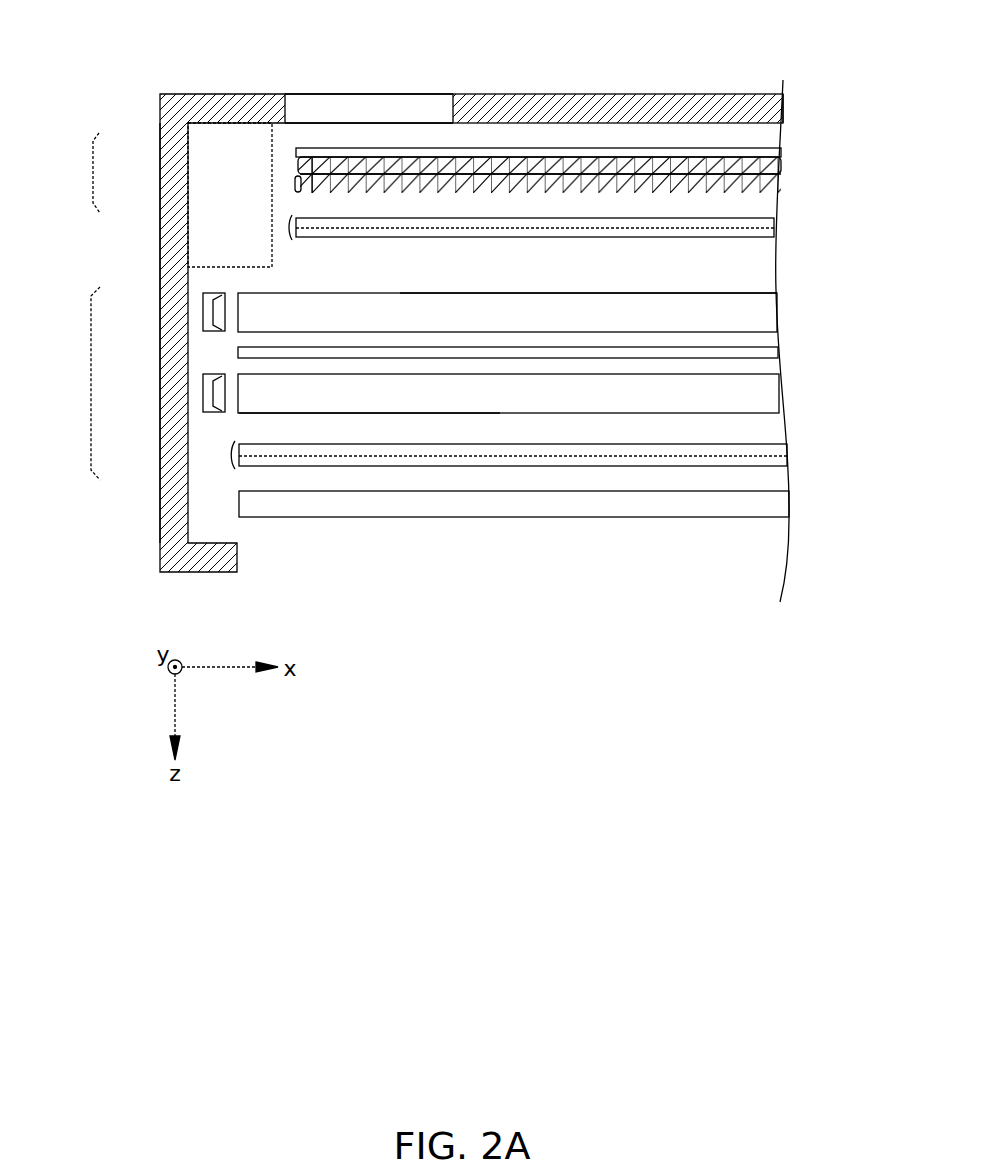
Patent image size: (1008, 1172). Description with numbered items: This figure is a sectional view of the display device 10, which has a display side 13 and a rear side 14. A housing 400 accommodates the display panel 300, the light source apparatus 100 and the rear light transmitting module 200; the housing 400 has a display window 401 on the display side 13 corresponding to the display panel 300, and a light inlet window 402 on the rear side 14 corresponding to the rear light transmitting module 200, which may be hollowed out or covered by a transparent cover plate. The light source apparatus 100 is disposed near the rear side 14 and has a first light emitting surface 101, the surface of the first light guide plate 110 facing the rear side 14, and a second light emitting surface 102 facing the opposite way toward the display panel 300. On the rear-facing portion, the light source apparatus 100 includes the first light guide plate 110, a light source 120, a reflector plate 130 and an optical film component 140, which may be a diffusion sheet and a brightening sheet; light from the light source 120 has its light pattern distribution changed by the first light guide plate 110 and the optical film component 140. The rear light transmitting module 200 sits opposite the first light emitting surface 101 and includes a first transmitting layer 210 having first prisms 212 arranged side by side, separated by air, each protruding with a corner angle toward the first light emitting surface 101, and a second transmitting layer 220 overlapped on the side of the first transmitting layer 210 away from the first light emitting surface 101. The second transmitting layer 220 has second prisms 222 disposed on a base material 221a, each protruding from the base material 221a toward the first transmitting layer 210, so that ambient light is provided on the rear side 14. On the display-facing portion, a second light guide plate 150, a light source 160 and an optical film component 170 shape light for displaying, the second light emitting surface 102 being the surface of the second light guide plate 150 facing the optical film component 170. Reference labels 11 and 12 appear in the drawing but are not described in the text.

The display device 10 is at (132, 38).
The first side 11 is at (160, 82).
The second side 12 is at (801, 78).
The display side 13 is at (502, 592).
The rear side 14 is at (343, 73).
The light source apparatus 100 is at (72, 379).
The first light emitting surface 101 is at (735, 293).
The second light emitting surface 102 is at (342, 410).
The first light guide plate 110 is at (240, 293).
The light source 120 is at (203, 310).
The reflector plate 130 is at (238, 352).
The optical film component 140 is at (288, 228).
The second light guide plate 150 is at (238, 413).
The light source 160 is at (203, 392).
The optical film component 170 is at (231, 455).
The rear light transmitting module 200 is at (72, 173).
The first transmitting layer 210 is at (296, 184).
The first prisms 212 is at (784, 190).
The second transmitting layer 220 is at (298, 165).
The base material 221a is at (296, 152).
The second prisms 222 is at (790, 168).
The display panel 300 is at (239, 500).
The housing 400 is at (200, 566).
The display window 401 is at (607, 585).
The light inlet window 402 is at (421, 95).